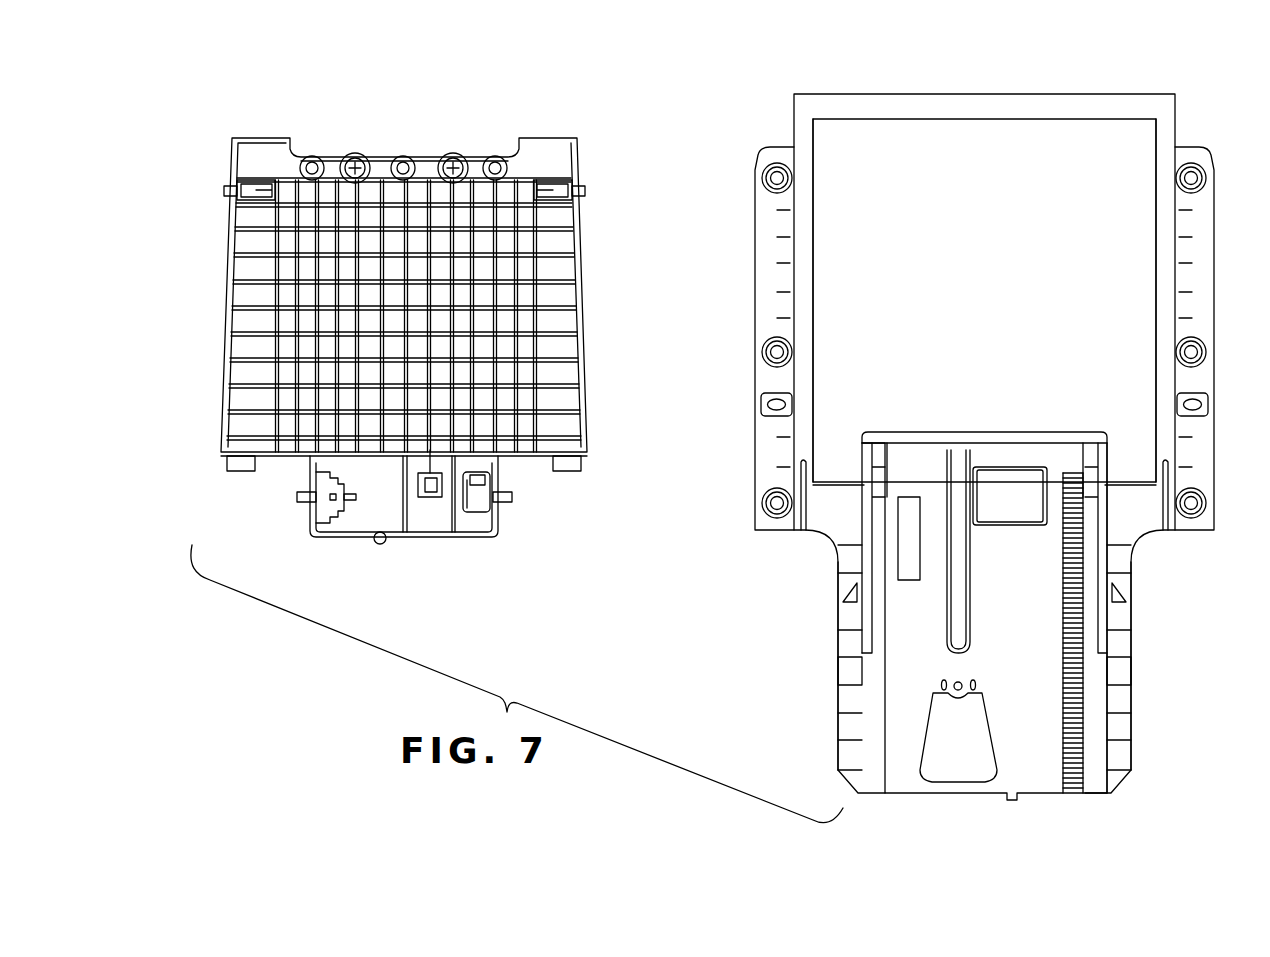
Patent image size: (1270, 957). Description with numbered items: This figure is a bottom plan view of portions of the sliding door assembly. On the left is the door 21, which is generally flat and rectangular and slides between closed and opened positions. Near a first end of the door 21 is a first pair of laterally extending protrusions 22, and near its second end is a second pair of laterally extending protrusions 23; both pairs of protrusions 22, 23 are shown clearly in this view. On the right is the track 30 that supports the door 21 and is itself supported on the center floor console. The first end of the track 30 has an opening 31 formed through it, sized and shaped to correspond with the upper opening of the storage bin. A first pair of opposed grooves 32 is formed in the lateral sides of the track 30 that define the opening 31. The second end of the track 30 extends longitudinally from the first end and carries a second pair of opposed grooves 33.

The door 21 is at (252, 320).
The first pair of laterally extending protrusions 22 is at (223, 190).
The second pair of laterally extending protrusions 23 is at (297, 497).
The track 30 is at (1153, 100).
The opening 31 is at (912, 118).
The first pair of opposed grooves 32 is at (813, 247).
The second pair of opposed grooves 33 is at (885, 720).